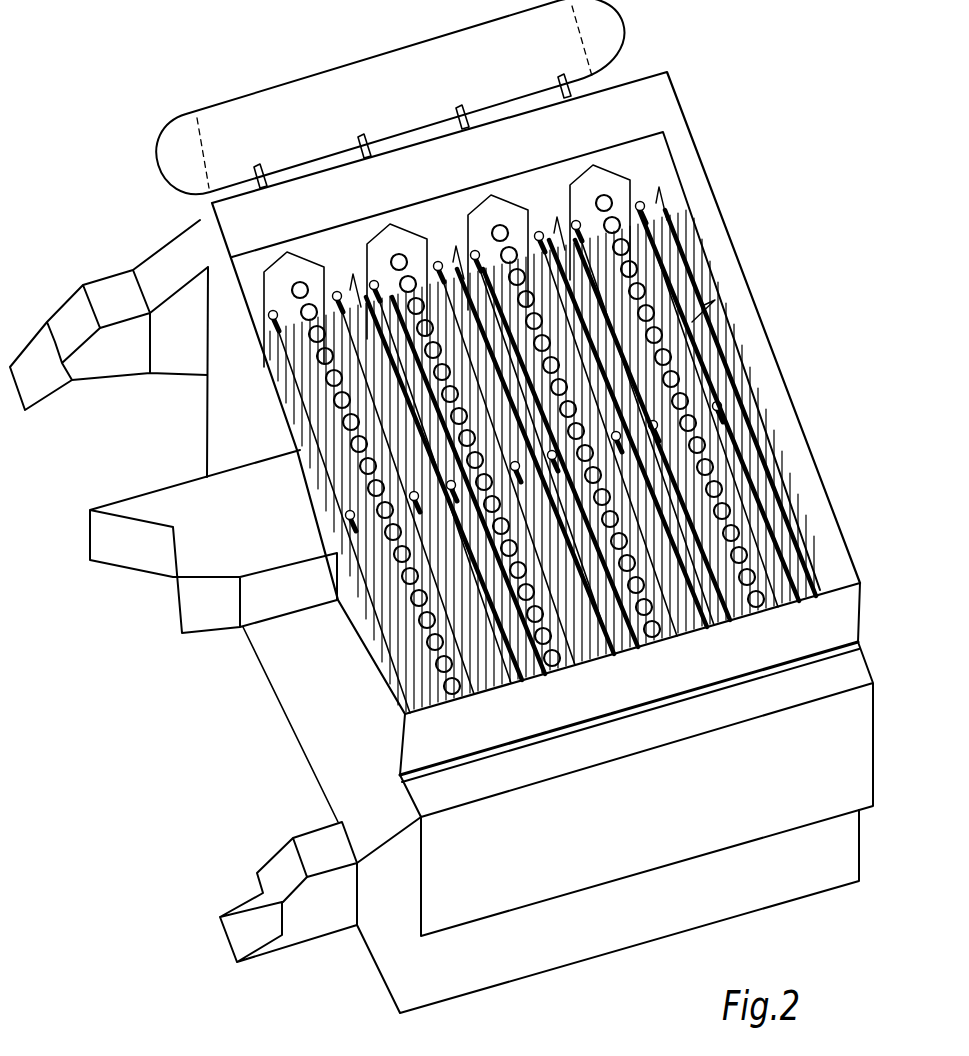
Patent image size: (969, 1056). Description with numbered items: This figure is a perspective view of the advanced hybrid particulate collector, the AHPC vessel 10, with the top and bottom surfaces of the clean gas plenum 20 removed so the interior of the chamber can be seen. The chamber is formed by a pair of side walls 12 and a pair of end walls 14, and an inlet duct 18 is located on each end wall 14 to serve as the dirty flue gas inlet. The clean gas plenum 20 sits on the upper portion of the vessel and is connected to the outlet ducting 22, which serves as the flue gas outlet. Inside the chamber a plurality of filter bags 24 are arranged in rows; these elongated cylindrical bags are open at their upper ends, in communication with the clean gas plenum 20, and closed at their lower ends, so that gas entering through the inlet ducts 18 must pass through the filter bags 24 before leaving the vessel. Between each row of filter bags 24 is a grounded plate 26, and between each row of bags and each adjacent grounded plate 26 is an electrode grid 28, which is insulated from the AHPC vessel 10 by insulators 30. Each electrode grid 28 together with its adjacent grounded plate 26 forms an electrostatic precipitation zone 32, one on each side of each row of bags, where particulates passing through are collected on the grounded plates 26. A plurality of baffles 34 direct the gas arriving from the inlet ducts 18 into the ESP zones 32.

The AHPC vessel 10 is at (98, 692).
The side walls 12 is at (807, 441).
The end walls 14 is at (503, 959).
The inlet duct 18 is at (77, 318).
The clean gas plenum 20 is at (787, 627).
The outlet ducting 22 is at (133, 522).
The filter bags 24 is at (658, 268).
The grounded plate 26 is at (770, 510).
The electrode grid 28 is at (290, 272).
The insulators 30 is at (645, 205).
The electrostatic precipitation (ESP) zone 32 is at (378, 378).
The baffles 34 is at (380, 232).